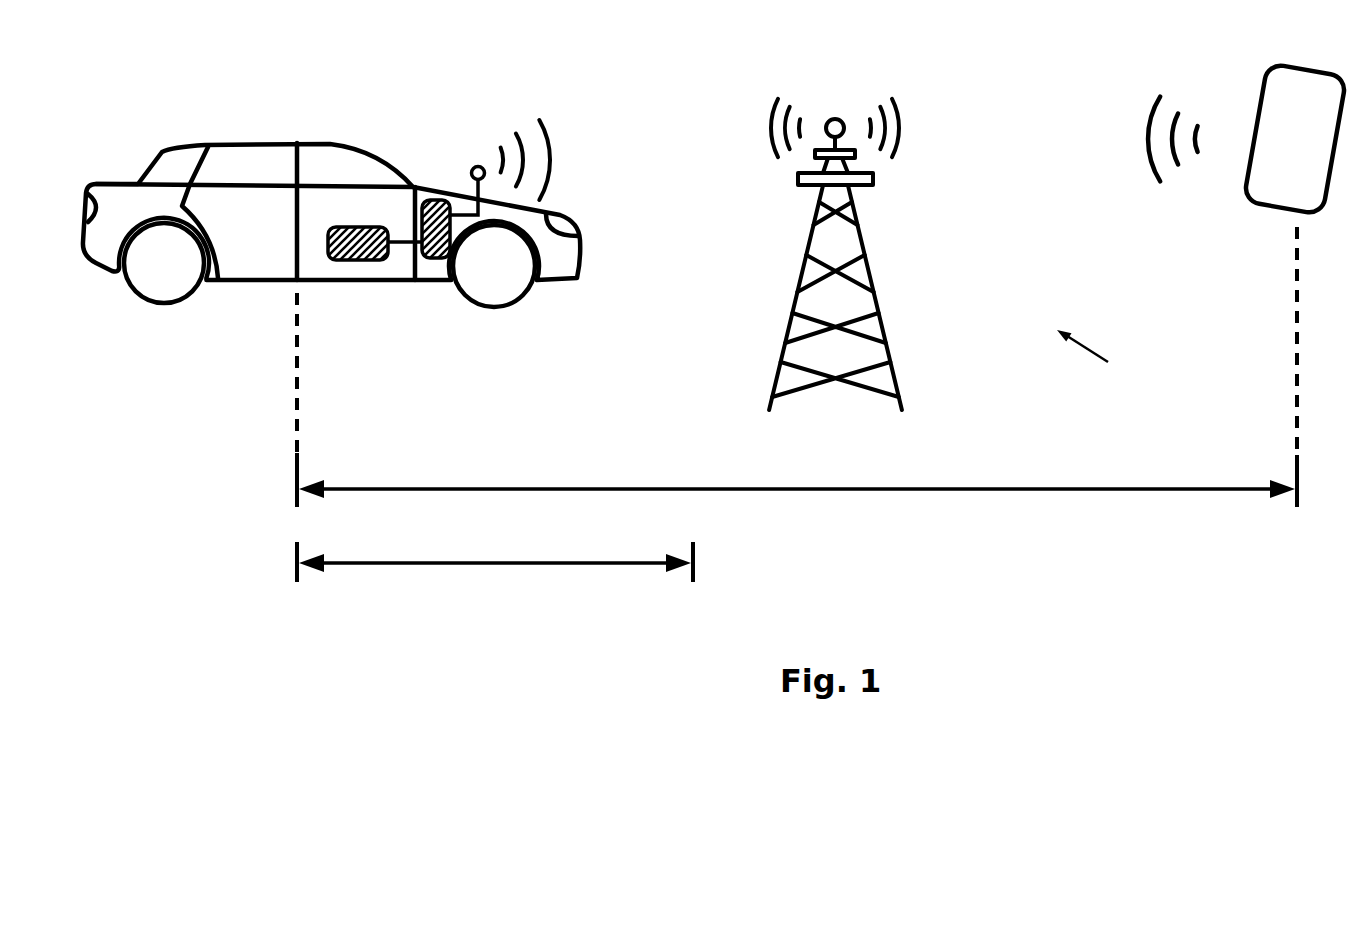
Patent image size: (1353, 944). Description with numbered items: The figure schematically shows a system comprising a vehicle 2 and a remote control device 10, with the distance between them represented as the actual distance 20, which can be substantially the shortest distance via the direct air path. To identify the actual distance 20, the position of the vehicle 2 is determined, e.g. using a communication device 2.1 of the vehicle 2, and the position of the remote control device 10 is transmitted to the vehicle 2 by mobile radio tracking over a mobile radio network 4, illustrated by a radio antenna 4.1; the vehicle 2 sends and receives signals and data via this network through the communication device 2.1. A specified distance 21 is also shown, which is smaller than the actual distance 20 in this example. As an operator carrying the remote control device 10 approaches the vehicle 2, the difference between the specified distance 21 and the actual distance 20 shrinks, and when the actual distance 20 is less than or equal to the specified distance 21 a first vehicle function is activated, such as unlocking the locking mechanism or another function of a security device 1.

The security device 1 is at (362, 260).
The vehicle 2 is at (242, 145).
The communication device 2.1 is at (453, 208).
The mobile radio network 4 is at (1102, 361).
The radio antenna 4.1 is at (832, 260).
The remote control device 10 is at (1312, 161).
The actual distance 20 is at (963, 489).
The specified distance 21 is at (453, 565).